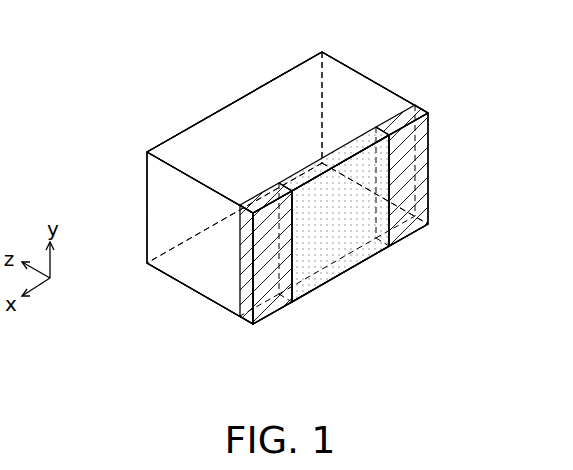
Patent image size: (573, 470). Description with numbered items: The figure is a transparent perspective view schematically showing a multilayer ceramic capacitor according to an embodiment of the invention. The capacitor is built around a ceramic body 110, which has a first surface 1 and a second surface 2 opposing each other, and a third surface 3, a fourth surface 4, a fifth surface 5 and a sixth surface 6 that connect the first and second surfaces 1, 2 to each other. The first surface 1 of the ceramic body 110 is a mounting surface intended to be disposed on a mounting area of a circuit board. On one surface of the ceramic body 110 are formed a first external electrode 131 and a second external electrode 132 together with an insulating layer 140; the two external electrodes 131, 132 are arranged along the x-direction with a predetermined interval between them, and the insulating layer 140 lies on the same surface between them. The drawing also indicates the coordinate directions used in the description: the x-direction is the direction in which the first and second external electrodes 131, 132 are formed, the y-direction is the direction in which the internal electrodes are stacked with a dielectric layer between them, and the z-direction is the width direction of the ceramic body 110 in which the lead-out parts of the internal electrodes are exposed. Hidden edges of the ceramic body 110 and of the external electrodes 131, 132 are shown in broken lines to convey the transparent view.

The ceramic body 110 is at (147, 183).
The first external electrode 131 is at (264, 322).
The second external electrode 132 is at (428, 197).
The insulating layer 140 is at (317, 290).
The first surface 1 is at (358, 241).
The second surface 2 is at (193, 155).
The third surface 3 is at (146, 231).
The fourth surface 4 is at (353, 92).
The fifth surface 5 is at (261, 108).
The sixth surface 6 is at (223, 286).